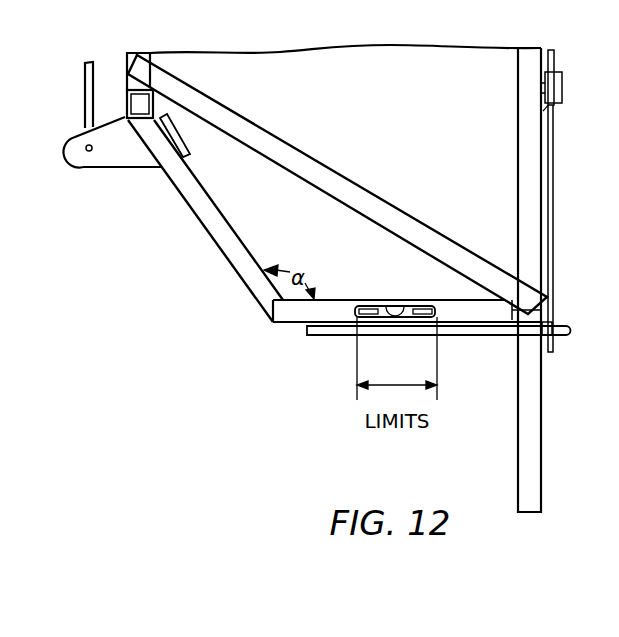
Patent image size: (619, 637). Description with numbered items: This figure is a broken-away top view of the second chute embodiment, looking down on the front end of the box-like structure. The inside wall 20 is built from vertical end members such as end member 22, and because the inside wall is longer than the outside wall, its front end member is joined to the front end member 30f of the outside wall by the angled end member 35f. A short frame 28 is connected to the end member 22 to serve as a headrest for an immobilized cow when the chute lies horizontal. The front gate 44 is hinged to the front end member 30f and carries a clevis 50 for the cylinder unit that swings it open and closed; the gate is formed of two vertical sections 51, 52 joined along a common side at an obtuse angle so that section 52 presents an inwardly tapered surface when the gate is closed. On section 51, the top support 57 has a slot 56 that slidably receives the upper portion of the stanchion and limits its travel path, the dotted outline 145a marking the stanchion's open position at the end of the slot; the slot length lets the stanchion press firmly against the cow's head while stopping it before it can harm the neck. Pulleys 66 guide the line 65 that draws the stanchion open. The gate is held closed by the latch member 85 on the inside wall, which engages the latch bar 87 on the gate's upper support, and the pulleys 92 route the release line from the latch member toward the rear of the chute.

The inside wall 20 is at (563, 177).
The vertical end member 22 is at (552, 312).
The short frame 28 is at (543, 463).
The front end member 30f is at (136, 107).
The angled end member 35f is at (379, 198).
The front gate 44 is at (263, 324).
The clevis 50 is at (75, 162).
The vertical section 51 is at (283, 322).
The vertical section 52 is at (231, 226).
The slot 56 is at (395, 306).
The top support 57 is at (469, 330).
The line 65 is at (262, 313).
The pulleys 66 is at (130, 156).
The latch member 85 is at (551, 249).
The latch bar 87 is at (565, 337).
The pulleys 92 is at (562, 97).
The stanchion open position 145a is at (423, 307).